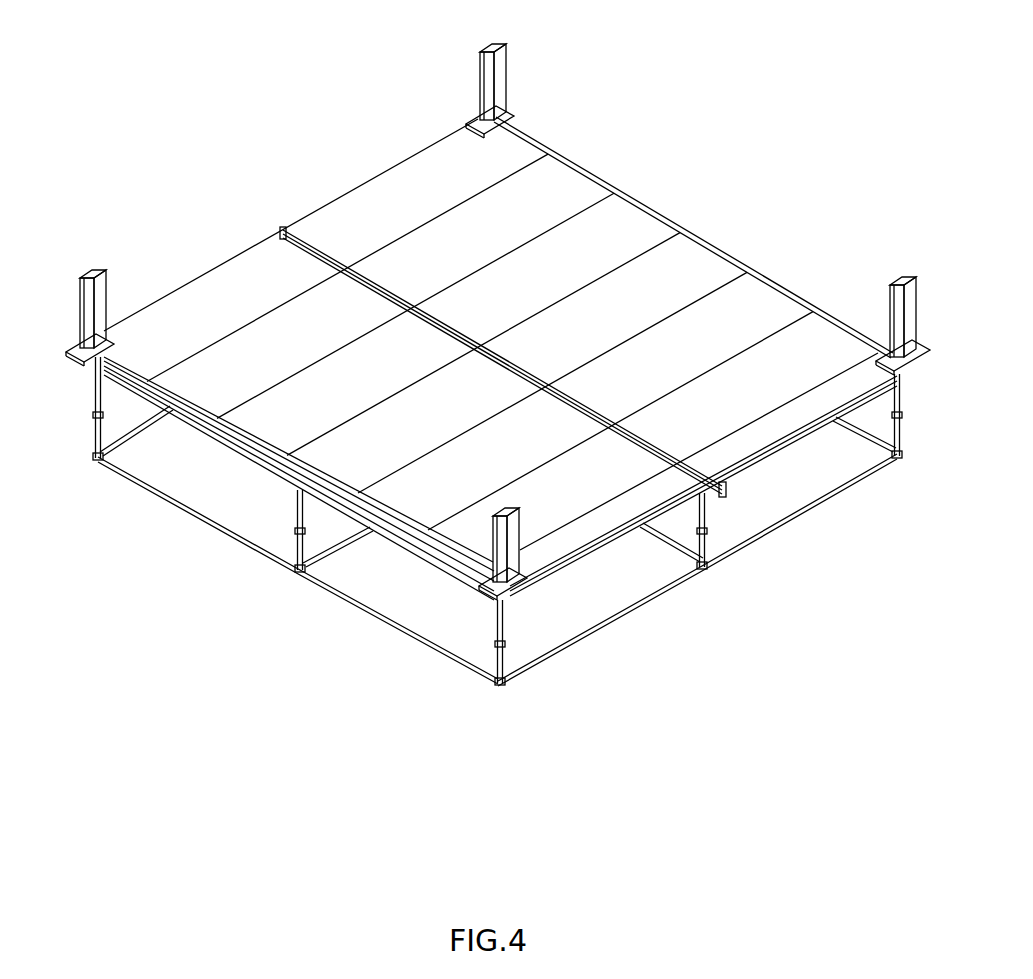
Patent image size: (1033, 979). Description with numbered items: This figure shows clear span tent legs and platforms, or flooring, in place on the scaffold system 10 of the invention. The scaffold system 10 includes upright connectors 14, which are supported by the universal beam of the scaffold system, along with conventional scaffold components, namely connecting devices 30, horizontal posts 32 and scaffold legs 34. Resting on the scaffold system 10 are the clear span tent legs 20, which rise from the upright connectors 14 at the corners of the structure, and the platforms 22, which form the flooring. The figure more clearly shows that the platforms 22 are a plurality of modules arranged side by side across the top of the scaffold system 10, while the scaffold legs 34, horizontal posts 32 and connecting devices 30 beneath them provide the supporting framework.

The scaffold system 10 is at (313, 183).
The upright connector 14 is at (476, 119).
The clear span tent legs 20 is at (482, 62).
The TF-2100 platforms 22 is at (431, 194).
The connecting devices 30 is at (900, 460).
The horizontal posts 32 is at (800, 517).
The scaffold legs 34 is at (905, 406).